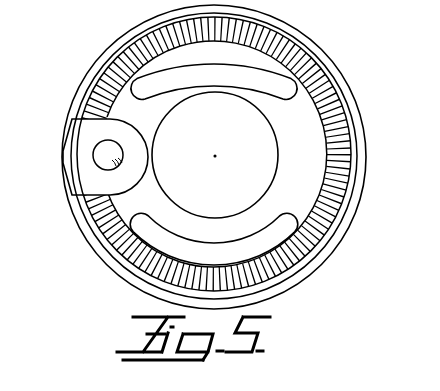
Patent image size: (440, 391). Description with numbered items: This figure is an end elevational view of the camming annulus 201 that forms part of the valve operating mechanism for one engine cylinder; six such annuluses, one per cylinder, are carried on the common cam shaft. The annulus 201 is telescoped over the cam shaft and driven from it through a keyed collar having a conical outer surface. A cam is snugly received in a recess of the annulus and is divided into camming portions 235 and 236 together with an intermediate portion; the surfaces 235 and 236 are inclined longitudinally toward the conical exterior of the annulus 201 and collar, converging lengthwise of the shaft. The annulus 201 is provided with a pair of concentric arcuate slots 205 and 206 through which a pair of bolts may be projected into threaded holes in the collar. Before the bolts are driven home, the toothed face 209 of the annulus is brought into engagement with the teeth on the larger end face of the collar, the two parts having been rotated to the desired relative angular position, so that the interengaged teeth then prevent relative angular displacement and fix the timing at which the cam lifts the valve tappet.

The camming annulus 201 is at (362, 172).
The toothed face 209 is at (350, 138).
The arcuate slot 205 is at (180, 58).
The arcuate slot 206 is at (182, 255).
The camming portion 235 is at (69, 134).
The camming portion 236 is at (72, 174).